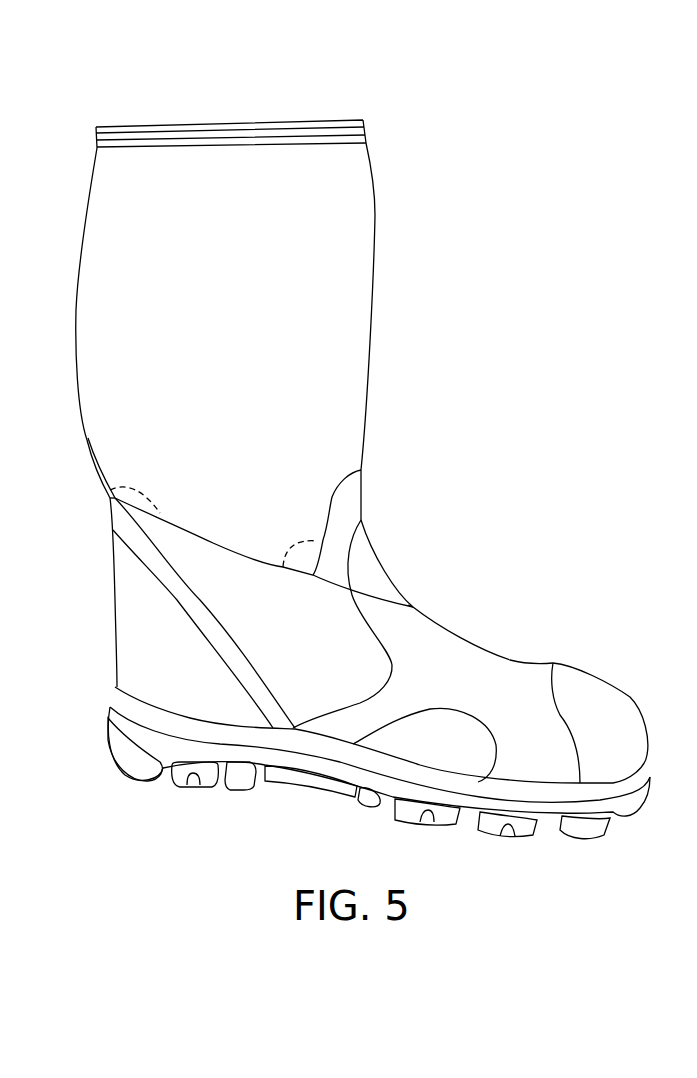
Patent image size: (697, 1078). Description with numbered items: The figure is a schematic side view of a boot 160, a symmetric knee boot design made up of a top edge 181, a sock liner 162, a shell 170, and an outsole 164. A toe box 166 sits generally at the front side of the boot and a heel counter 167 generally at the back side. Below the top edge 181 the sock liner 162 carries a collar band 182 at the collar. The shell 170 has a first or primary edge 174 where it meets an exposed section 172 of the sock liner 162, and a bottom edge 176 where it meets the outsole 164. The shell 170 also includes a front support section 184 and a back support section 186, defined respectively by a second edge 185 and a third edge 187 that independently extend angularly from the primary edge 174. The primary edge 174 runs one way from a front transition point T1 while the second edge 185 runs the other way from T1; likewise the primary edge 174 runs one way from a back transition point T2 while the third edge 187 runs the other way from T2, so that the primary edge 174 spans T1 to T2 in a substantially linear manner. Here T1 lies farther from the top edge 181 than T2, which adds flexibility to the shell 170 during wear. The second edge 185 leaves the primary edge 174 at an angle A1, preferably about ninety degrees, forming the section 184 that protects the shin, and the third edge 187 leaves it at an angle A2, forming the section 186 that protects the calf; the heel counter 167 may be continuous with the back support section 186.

The boot 160 is at (523, 92).
The sock liner 162 is at (252, 328).
The outsole 164 is at (472, 807).
The toe box 166 is at (593, 687).
The heel counter 167 is at (135, 660).
The shell 170 is at (325, 656).
The exposed section 172 is at (375, 212).
The first or primary edge 174 is at (213, 543).
The bottom edge 176 is at (637, 810).
The top edge 181 is at (227, 120).
The collar band 182 is at (365, 127).
The front support section 184 is at (350, 493).
The second edge 185 is at (329, 510).
The back support section 186 is at (100, 477).
The third edge 187 is at (88, 452).
The angle A1 is at (307, 560).
The angle A2 is at (115, 497).
The front transition point T1 is at (413, 607).
The back transition point T2 is at (115, 500).